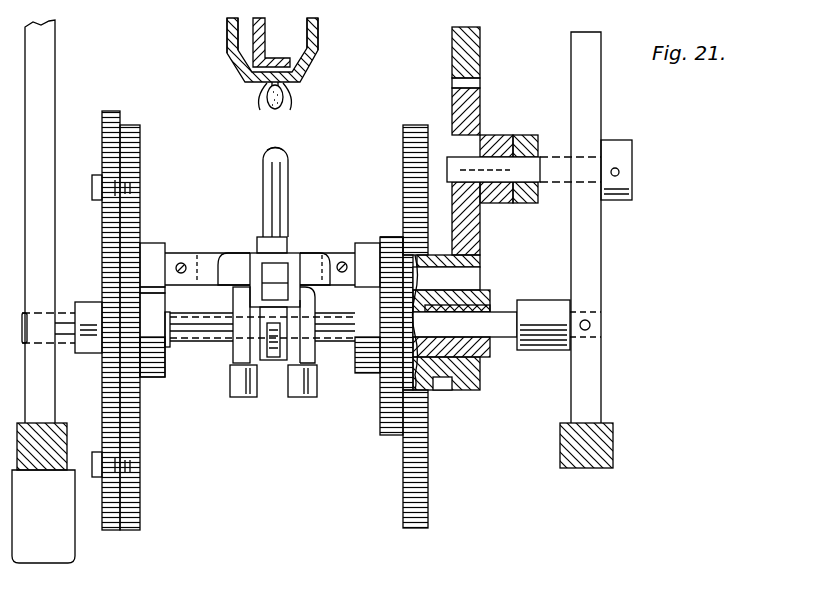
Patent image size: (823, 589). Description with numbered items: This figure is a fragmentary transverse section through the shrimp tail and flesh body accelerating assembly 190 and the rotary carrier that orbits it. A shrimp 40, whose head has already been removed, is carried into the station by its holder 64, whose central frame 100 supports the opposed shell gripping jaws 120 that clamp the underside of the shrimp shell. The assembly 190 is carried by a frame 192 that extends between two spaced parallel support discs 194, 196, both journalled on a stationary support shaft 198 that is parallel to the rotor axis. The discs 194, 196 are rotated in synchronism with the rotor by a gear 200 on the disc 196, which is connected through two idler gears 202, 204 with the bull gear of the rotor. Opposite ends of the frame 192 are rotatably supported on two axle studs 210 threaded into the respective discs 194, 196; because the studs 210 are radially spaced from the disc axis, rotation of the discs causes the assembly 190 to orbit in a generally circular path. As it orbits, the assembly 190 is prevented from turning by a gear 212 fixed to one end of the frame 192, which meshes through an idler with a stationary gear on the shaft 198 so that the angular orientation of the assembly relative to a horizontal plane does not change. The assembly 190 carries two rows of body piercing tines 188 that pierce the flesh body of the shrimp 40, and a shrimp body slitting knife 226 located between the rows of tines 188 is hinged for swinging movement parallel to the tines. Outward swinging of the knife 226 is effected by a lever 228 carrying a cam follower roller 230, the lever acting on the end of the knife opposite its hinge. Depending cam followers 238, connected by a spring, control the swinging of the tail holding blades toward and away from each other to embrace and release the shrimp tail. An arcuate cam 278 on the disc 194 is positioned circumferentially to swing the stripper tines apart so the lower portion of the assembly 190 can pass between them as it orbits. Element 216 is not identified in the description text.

The shrimp 40 is at (292, 100).
The holder 64 is at (320, 42).
The central frame 100 is at (258, 50).
The shell gripping jaws 120 is at (227, 44).
The body piercing tines 188 is at (276, 135).
The shrimp tail and flesh body accelerating assembly 190 is at (297, 243).
The frame 192 is at (180, 253).
The support disc 194 is at (134, 137).
The support disc 196 is at (402, 145).
The stationary support shaft 198 is at (195, 333).
The gear 200 is at (478, 275).
The idler gear 202 is at (478, 229).
The idler gear 204 is at (472, 56).
The axle studs 210 is at (170, 317).
The gear 212 is at (393, 237).
The pinion gear 216 is at (380, 430).
The shrimp body slitting knife 226 is at (263, 182).
The lever 228 is at (258, 297).
The cam follower roller 230 is at (317, 358).
The cam followers 238 is at (300, 375).
The arcuate cam 278 is at (116, 112).